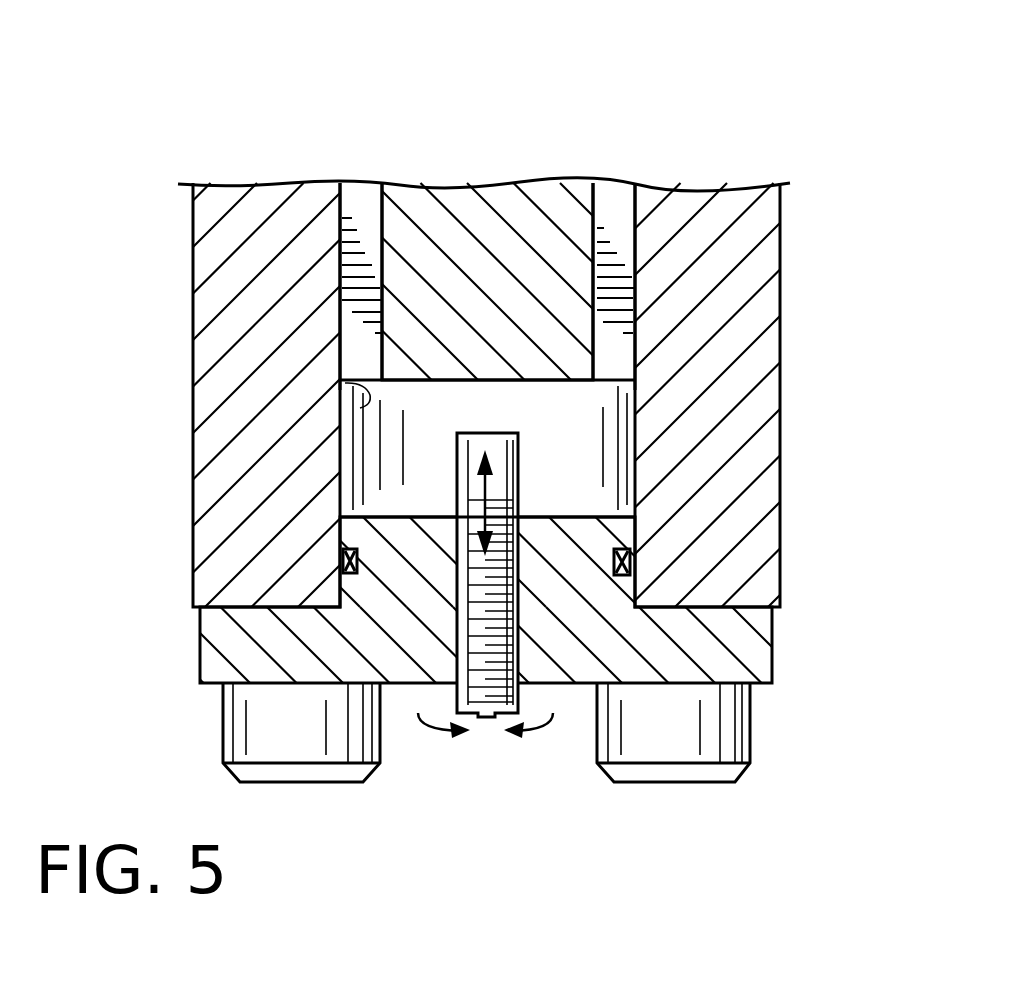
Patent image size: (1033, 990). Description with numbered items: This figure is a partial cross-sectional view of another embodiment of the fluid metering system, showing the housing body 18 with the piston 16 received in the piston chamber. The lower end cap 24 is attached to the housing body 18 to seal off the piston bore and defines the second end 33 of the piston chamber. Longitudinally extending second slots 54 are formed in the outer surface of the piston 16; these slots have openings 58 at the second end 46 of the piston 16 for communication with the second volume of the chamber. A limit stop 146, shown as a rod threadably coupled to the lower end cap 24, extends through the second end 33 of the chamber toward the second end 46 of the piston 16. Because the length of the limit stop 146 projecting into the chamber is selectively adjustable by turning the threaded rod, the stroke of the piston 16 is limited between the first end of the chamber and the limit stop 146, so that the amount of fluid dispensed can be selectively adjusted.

The housing body 18 is at (783, 203).
The second slots 54 is at (360, 200).
The piston 16 is at (640, 290).
The second end of the piston 46 is at (580, 383).
The openings 58 is at (360, 384).
The lower end cap 24 is at (774, 643).
The limit stop 146 is at (522, 650).
The second end of the piston chamber 33 is at (573, 515).